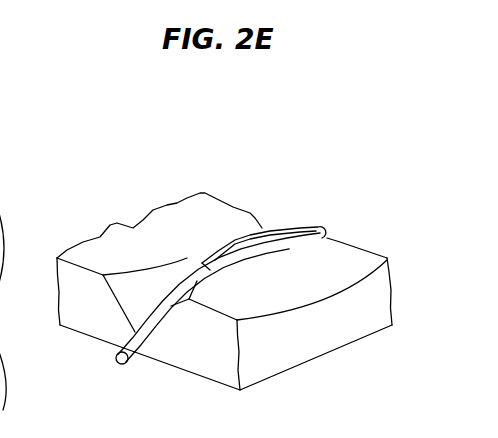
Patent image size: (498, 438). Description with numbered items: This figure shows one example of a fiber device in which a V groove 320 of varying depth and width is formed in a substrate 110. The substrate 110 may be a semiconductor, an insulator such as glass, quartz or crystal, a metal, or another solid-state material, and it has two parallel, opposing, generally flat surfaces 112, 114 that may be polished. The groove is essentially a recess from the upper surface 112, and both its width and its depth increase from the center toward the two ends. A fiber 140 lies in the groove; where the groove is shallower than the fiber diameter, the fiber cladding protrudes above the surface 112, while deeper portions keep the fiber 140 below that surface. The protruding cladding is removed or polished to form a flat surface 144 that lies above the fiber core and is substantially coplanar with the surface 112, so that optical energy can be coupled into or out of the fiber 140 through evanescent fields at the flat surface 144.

The substrate 110 is at (195, 369).
The substrate surface 112 is at (340, 249).
The substrate surface 114 is at (96, 340).
The fiber 140 is at (132, 333).
The flat surface 144 is at (210, 248).
The strap 320 is at (255, 221).